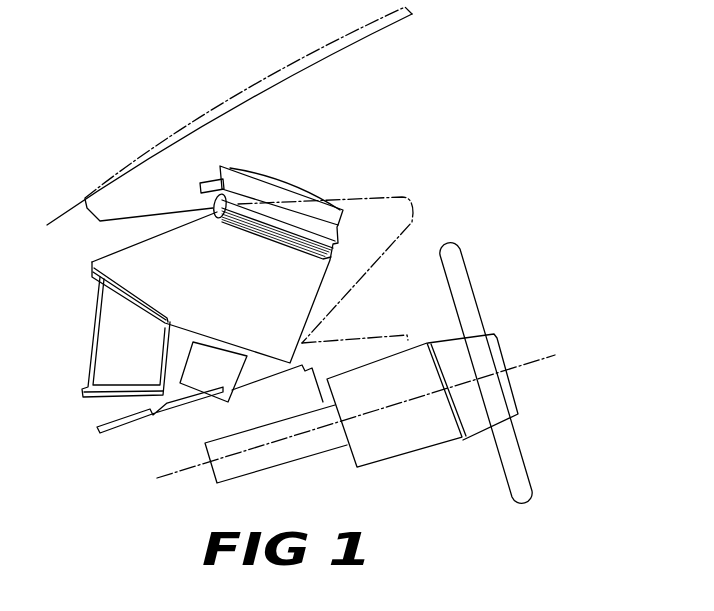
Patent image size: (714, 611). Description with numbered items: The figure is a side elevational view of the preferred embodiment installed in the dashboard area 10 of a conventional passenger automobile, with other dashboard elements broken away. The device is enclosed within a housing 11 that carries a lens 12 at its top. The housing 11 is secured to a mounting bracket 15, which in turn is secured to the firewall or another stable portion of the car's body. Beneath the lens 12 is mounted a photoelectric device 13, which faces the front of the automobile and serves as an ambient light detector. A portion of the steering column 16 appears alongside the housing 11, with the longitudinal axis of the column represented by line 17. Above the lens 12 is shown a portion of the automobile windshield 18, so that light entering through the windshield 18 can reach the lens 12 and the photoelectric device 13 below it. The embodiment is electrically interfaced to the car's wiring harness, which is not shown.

The dashboard area 10 is at (381, 196).
The housing 11 is at (238, 297).
The lens 12 is at (298, 188).
The photoelectric device 13 is at (202, 184).
The mounting bracket 15 is at (164, 343).
The steering column 16 is at (378, 456).
The longitudinal axis of the steering column 17 is at (526, 359).
The automobile windshield 18 is at (200, 117).